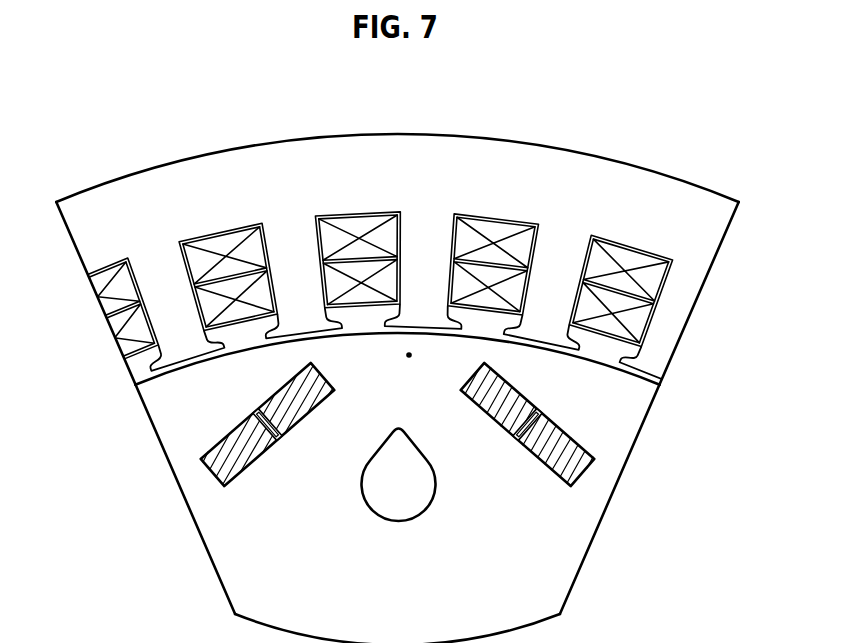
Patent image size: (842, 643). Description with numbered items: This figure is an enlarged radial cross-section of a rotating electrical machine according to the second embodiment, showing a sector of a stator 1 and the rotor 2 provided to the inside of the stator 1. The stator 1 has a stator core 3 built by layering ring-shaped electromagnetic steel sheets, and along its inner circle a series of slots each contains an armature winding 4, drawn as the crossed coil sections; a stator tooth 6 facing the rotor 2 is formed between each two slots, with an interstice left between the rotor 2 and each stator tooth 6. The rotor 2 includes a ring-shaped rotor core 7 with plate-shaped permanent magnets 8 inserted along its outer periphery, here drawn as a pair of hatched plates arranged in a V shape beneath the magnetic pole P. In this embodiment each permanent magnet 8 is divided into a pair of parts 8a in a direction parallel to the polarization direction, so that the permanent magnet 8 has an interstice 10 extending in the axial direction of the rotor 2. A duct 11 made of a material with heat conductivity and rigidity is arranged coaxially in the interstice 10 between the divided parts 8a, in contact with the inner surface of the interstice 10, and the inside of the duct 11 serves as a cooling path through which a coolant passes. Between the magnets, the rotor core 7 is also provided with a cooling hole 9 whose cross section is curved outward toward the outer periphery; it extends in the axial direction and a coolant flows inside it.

The stator 1 is at (667, 157).
The rotor 2 is at (459, 441).
The stator core 3 is at (394, 233).
The armature winding 4 is at (494, 243).
The stator tooth 6 is at (303, 325).
The rotor core 7 is at (550, 553).
The permanent magnet 8 is at (492, 449).
The divided part of permanent magnet 8a is at (520, 391).
The cooling hole 9 is at (366, 497).
The interstice 10 is at (279, 421).
The duct 11 is at (241, 450).
The magnetic pole P is at (409, 352).